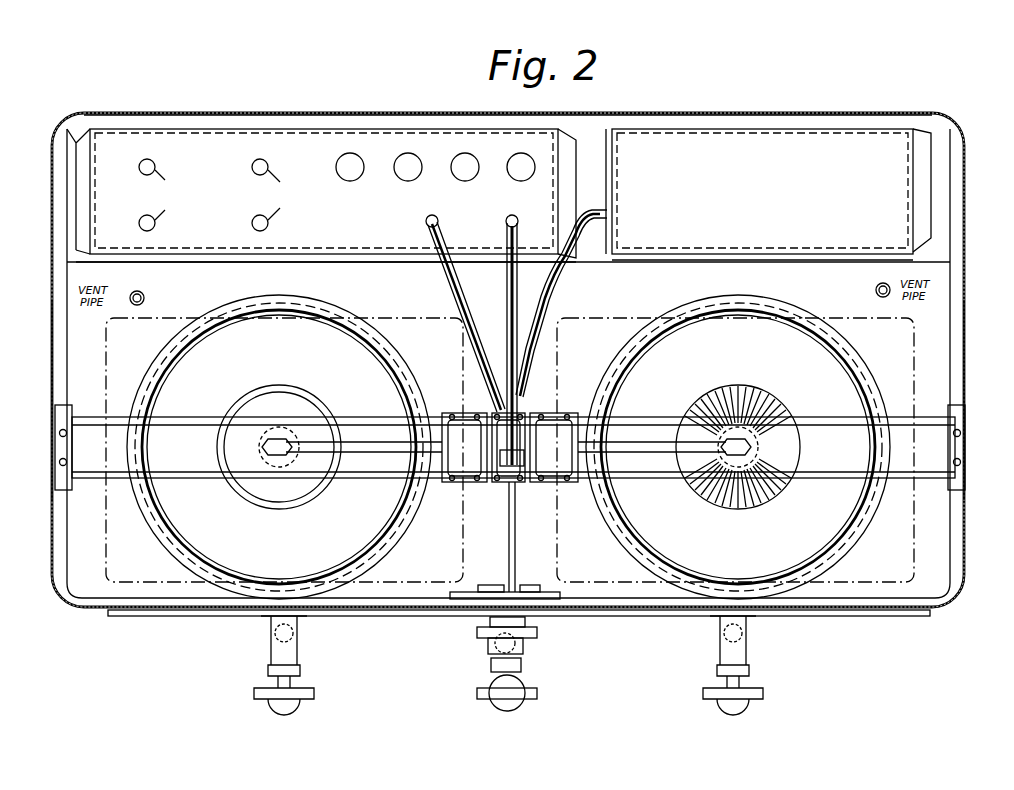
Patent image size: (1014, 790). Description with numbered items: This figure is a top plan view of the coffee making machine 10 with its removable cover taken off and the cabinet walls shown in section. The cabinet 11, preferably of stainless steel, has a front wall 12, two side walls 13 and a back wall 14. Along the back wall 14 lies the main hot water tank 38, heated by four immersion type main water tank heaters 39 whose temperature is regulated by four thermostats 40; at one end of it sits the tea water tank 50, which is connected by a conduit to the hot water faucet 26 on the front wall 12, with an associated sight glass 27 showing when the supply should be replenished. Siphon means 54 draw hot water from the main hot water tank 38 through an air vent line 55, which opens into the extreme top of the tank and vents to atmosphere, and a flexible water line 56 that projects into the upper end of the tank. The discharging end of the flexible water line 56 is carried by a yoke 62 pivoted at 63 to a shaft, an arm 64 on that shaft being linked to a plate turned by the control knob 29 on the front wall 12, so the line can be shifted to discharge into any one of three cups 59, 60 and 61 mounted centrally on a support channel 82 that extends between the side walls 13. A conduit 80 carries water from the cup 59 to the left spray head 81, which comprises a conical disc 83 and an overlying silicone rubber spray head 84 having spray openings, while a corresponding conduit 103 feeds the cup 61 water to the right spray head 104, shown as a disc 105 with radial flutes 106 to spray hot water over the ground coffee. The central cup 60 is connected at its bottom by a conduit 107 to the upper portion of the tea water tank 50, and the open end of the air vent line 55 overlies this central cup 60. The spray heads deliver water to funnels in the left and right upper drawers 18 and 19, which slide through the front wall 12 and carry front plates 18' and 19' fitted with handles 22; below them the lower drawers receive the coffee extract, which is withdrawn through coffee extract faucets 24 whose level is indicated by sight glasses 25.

The coffee making machine 10 is at (846, 87).
The cabinet 11 is at (64, 122).
The front wall 12 is at (624, 612).
The side walls 13 is at (51, 380).
The back wall 14 is at (374, 113).
The left upper drawer 18 is at (266, 453).
The front plate 18' is at (146, 629).
The right upper drawer 19 is at (735, 450).
The front plate 19' is at (863, 629).
The handles 22 is at (268, 624).
The coffee extract faucets 24 is at (302, 688).
The sight glasses 25 is at (298, 633).
The hot water faucet 26 is at (528, 684).
The sight glass 27 is at (524, 645).
The control knob 29 is at (476, 634).
The main hot water tank 38 is at (285, 142).
The main water tank heaters 39 is at (396, 163).
The thermostats 40 is at (140, 218).
The tea water tank 50 is at (786, 242).
The siphon means 54 is at (377, 272).
The air vent line 55 is at (462, 270).
The flexible water line 56 is at (518, 270).
The cup 59 is at (452, 410).
The central cup 60 is at (492, 412).
The cup 61 is at (558, 430).
The yoke 62 is at (490, 482).
The pivot 63 is at (516, 508).
The arm 64 is at (526, 590).
The conduit 80 is at (382, 440).
The spray head 81 is at (249, 367).
The support channel 82 is at (175, 428).
The conical disc 83 is at (304, 400).
The spray head 84 is at (280, 384).
The conduit 103 is at (620, 432).
The spray head 104 is at (799, 383).
The disc 105 is at (800, 408).
The radial flutes 106 is at (756, 384).
The conduit 107 is at (540, 338).